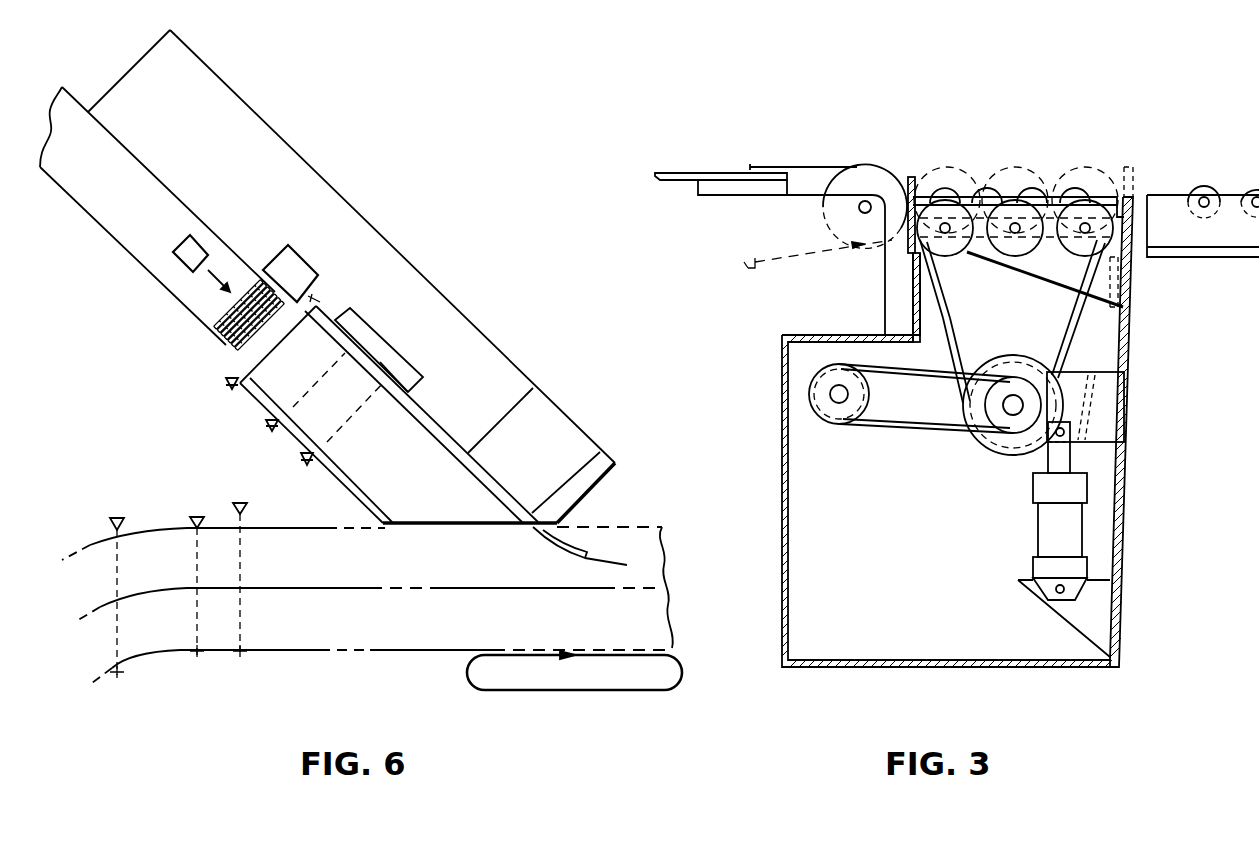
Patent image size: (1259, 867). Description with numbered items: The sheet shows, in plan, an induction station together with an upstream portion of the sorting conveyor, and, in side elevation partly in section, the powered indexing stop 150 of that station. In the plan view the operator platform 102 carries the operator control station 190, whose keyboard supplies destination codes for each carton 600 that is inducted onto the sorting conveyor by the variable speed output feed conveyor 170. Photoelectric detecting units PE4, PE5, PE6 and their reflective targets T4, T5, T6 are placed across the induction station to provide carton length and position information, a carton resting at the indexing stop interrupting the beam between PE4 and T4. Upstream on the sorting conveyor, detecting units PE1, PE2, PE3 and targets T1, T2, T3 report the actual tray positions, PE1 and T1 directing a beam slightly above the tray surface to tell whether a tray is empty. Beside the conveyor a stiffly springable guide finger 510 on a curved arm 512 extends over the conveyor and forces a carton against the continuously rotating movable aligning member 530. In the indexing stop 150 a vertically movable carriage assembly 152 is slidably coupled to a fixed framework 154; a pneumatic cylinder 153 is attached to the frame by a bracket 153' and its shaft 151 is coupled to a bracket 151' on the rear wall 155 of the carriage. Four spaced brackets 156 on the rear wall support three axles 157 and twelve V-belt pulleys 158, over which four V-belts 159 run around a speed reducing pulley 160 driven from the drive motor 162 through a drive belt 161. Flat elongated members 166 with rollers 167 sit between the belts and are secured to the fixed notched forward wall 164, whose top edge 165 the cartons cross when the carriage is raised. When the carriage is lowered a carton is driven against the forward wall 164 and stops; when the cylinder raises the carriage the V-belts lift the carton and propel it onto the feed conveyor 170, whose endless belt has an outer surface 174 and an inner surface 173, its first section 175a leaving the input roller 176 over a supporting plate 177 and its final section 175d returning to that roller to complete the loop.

In FIG. 6, the operator platform 102 is at (287, 143).
In FIG. 6, the carton 600 is at (200, 245).
In FIG. 6, the operator control station 190 is at (307, 260).
In FIG. 6, the target T4 is at (318, 300).
In FIG. 6, the target T5 is at (357, 345).
In FIG. 6, the target T6 is at (392, 377).
In FIG. 6, the variable speed output feed conveyor 170 is at (420, 425).
In FIG. 3, the variable speed output feed conveyor 170 is at (768, 160).
In FIG. 6, the photoelectric detecting unit PE1 is at (117, 518).
In FIG. 6, the photoelectric detecting unit PE2 is at (194, 574).
In FIG. 6, the photoelectric detecting unit PE3 is at (242, 568).
In FIG. 6, the photoelectric detecting unit PE4 is at (226, 385).
In FIG. 6, the photoelectric detecting unit PE5 is at (266, 426).
In FIG. 6, the photoelectric detecting unit PE6 is at (301, 460).
In FIG. 6, the target T1 is at (119, 681).
In FIG. 6, the target T2 is at (196, 662).
In FIG. 6, the target T3 is at (241, 662).
In FIG. 6, the guide finger 510 is at (612, 565).
In FIG. 6, the curved arm 512 is at (573, 543).
In FIG. 6, the movable aligning member 530 is at (631, 695).
In FIG. 3, the powered indexing stop 150 is at (1065, 129).
In FIG. 3, the shaft 151 is at (1021, 452).
In FIG. 3, the bracket 151' is at (1139, 464).
In FIG. 3, the vertically movable carriage assembly 152 is at (1128, 400).
In FIG. 3, the pneumatic cylinder 153 is at (1026, 536).
In FIG. 3, the bracket 153' is at (1055, 618).
In FIG. 3, the fixed framework 154 is at (1120, 533).
In FIG. 3, the rear wall 155 is at (1134, 250).
In FIG. 3, the spaced brackets 156 is at (1063, 295).
In FIG. 3, the axles 157 is at (987, 213).
In FIG. 3, the V-belt pulleys 158 is at (1082, 233).
In FIG. 3, the V-belts 159 is at (957, 388).
In FIG. 3, the speed reducing pulley 160 is at (1000, 355).
In FIG. 3, the drive belt 161 is at (897, 375).
In FIG. 3, the drive motor 162 is at (825, 422).
In FIG. 3, the fixed notched forward wall 164 is at (912, 267).
In FIG. 3, the top edge 165 is at (913, 178).
In FIG. 3, the members 166 is at (990, 200).
In FIG. 3, the rollers 167 is at (985, 195).
In FIG. 3, the inner surface 173 is at (757, 258).
In FIG. 3, the outer surface 174 is at (823, 167).
In FIG. 3, the first section of the belt 175a is at (784, 165).
In FIG. 3, the final section of the belt 175d is at (797, 260).
In FIG. 3, the roller 176 is at (870, 178).
In FIG. 3, the plate 177 is at (672, 180).